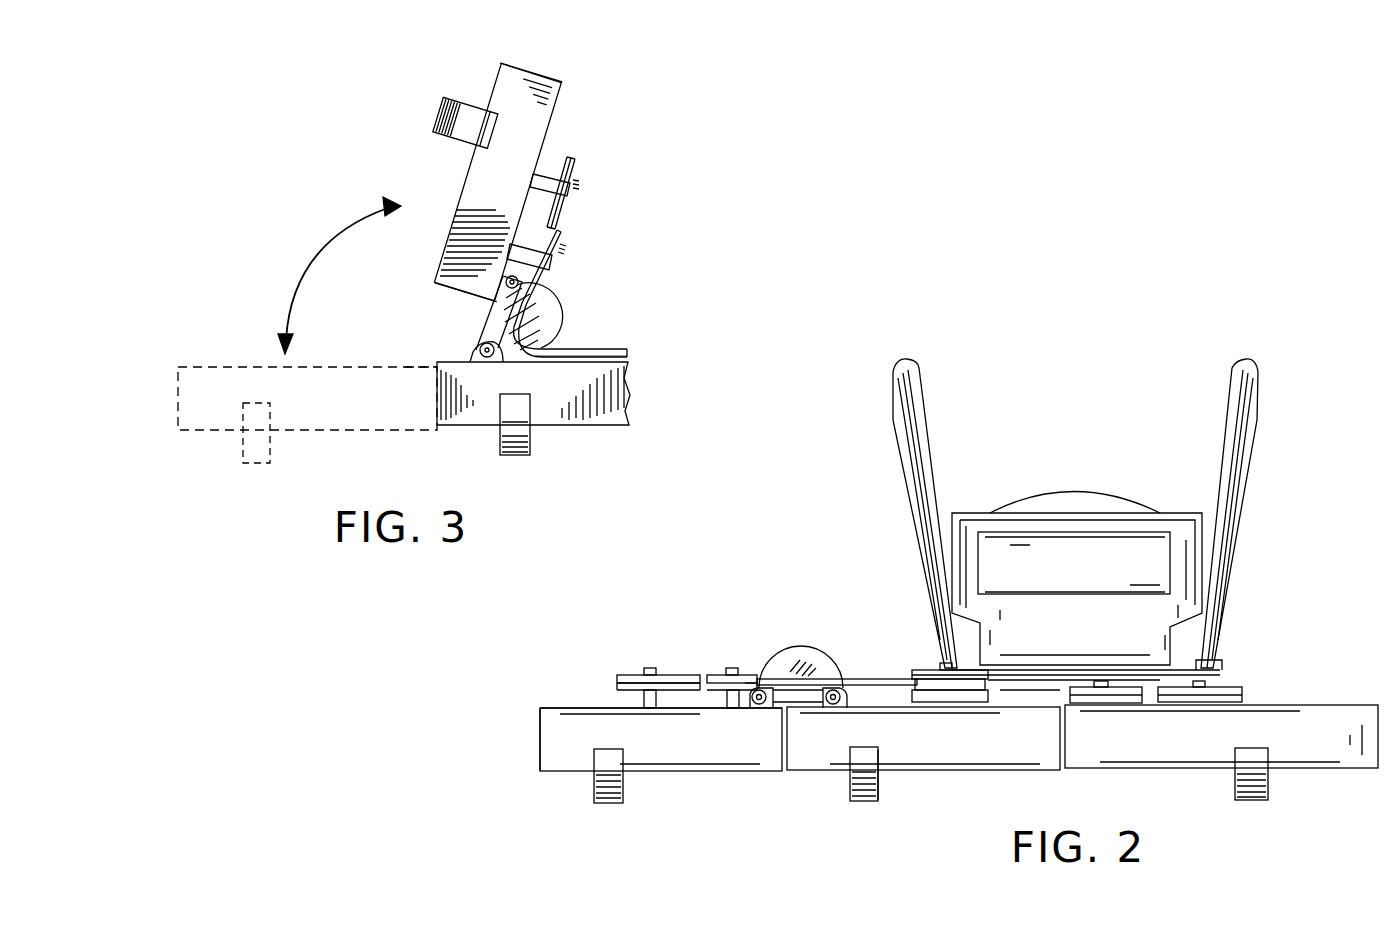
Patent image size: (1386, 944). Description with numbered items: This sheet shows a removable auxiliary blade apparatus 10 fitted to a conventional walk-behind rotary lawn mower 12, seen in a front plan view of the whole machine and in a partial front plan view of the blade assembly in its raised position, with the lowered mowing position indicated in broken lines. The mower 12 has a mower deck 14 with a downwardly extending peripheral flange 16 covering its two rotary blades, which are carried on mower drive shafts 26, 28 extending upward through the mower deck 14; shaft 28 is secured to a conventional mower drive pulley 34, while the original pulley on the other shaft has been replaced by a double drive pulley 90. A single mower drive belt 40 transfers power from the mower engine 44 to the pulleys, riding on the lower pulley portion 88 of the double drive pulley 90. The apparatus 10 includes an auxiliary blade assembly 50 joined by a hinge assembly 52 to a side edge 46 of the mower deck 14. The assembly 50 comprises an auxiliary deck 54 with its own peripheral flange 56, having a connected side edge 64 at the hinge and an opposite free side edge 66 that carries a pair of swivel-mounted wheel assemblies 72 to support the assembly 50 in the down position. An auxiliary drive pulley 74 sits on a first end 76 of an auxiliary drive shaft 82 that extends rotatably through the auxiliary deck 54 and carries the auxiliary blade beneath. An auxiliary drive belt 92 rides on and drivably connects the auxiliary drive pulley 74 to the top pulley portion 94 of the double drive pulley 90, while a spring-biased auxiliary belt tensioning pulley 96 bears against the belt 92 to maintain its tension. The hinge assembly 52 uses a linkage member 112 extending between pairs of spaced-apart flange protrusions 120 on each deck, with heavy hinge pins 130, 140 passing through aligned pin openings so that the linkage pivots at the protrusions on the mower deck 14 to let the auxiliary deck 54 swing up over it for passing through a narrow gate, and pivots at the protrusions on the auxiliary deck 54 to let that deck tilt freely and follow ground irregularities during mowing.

In FIG. 3, the removable auxiliary blade apparatus 10 is at (655, 126).
In FIG. 2, the removable auxiliary blade apparatus 10 is at (976, 388).
In FIG. 2, the rotary lawn mower 12 is at (1085, 418).
In FIG. 3, the mower deck 14 is at (614, 350).
In FIG. 2, the mower deck 14 is at (1284, 704).
In FIG. 3, the peripheral flange 16 is at (585, 405).
In FIG. 2, the peripheral flange 16 is at (940, 750).
In FIG. 2, the mower drive shaft 26 is at (946, 670).
In FIG. 2, the mower drive shaft 28 is at (1214, 660).
In FIG. 2, the mower drive pulley 34 is at (1238, 691).
In FIG. 2, the mower drive belt 40 is at (1050, 662).
In FIG. 2, the mower engine 44 is at (1116, 556).
In FIG. 3, the side edge of mower deck 46 is at (480, 345).
In FIG. 2, the side edge of mower deck 46 is at (812, 700).
In FIG. 3, the auxiliary blade assembly 50 is at (257, 208).
In FIG. 2, the auxiliary blade assembly 50 is at (760, 612).
In FIG. 3, the hinge assembly 52 is at (642, 298).
In FIG. 2, the hinge assembly 52 is at (872, 592).
In FIG. 3, the auxiliary deck 54 is at (562, 121).
In FIG. 2, the auxiliary deck 54 is at (560, 708).
In FIG. 3, the peripheral flange 56 is at (500, 156).
In FIG. 2, the peripheral flange 56 is at (553, 736).
In FIG. 3, the connected side edge 64 is at (470, 263).
In FIG. 2, the connected side edge 64 is at (740, 712).
In FIG. 3, the free side edge 66 is at (566, 87).
In FIG. 3, the swivel-mounted wheel assembly 72 is at (460, 104).
In FIG. 2, the swivel-mounted wheel assembly 72 is at (596, 792).
In FIG. 3, the auxiliary drive pulley 74 is at (580, 167).
In FIG. 2, the auxiliary drive pulley 74 is at (625, 675).
In FIG. 3, the first end of auxiliary drive shaft 76 is at (573, 186).
In FIG. 2, the first end of auxiliary drive shaft 76 is at (651, 668).
In FIG. 3, the auxiliary drive shaft 82 is at (556, 213).
In FIG. 2, the auxiliary drive shaft 82 is at (641, 701).
In FIG. 2, the lower pulley portion 88 is at (1036, 702).
In FIG. 2, the double drive pulley 90 is at (970, 632).
In FIG. 3, the auxiliary drive belt 92 is at (561, 350).
In FIG. 2, the auxiliary drive belt 92 is at (704, 675).
In FIG. 2, the top pulley portion 94 is at (1032, 706).
In FIG. 3, the auxiliary belt tensioning pulley 96 is at (557, 251).
In FIG. 2, the auxiliary belt tensioning pulley 96 is at (753, 676).
In FIG. 3, the linkage member 112 is at (530, 318).
In FIG. 2, the linkage member 112 is at (836, 672).
In FIG. 3, the flange protrusion 120 is at (486, 358).
In FIG. 2, the flange protrusion 120 is at (877, 762).
In FIG. 3, the hinge pin 130 is at (519, 283).
In FIG. 2, the hinge pin 130 is at (756, 706).
In FIG. 3, the hinge pin 140 is at (478, 362).
In FIG. 2, the hinge pin 140 is at (830, 706).